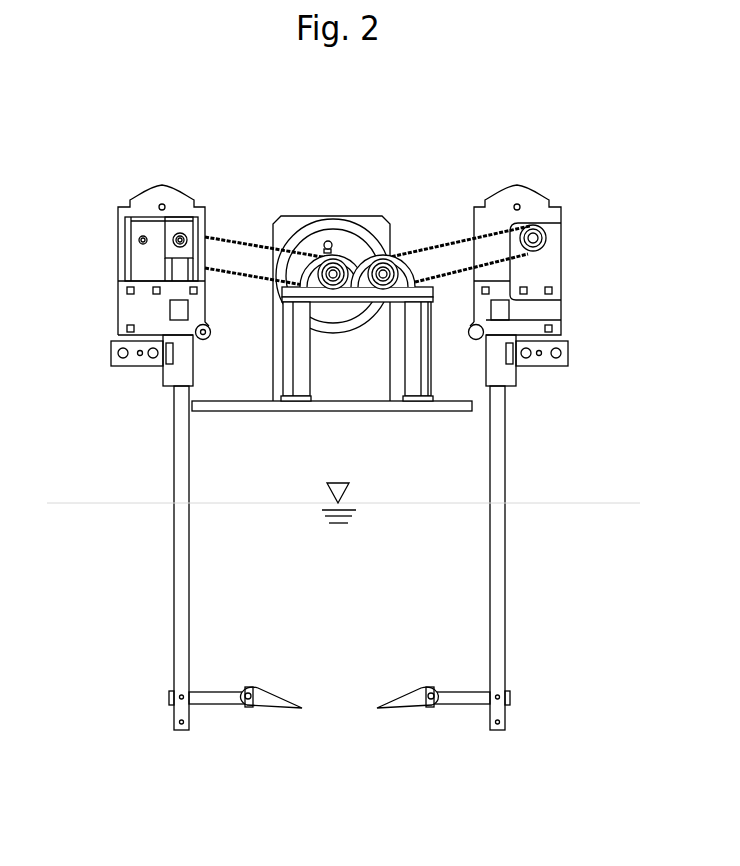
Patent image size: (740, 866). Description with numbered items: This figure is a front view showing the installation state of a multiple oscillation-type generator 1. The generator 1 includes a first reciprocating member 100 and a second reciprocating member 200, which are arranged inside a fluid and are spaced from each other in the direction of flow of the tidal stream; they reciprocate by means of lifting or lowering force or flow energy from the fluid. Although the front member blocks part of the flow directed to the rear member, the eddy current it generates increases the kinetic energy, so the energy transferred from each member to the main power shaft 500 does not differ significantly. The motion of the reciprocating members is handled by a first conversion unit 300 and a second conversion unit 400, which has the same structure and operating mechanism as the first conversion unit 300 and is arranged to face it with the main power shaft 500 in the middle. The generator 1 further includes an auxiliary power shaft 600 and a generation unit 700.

The multiple oscillation-type generator 1 is at (239, 134).
The first reciprocating member 100 is at (267, 707).
The second reciprocating member 200 is at (444, 707).
The first conversion unit 300 is at (97, 222).
The second conversion unit 400 is at (584, 220).
The main power shaft 500 is at (338, 250).
The auxiliary power shaft 600 is at (386, 252).
The generation unit 700 is at (371, 216).